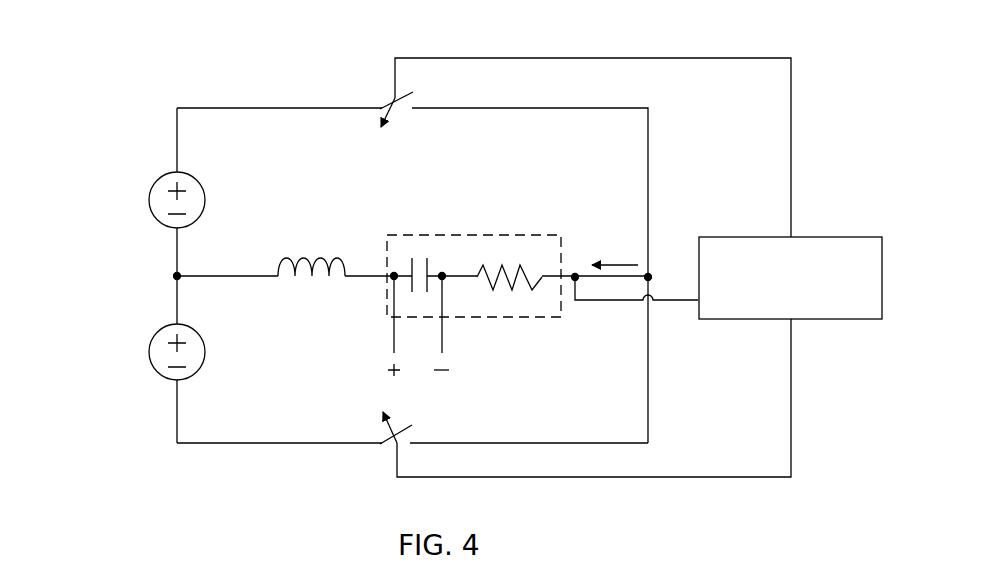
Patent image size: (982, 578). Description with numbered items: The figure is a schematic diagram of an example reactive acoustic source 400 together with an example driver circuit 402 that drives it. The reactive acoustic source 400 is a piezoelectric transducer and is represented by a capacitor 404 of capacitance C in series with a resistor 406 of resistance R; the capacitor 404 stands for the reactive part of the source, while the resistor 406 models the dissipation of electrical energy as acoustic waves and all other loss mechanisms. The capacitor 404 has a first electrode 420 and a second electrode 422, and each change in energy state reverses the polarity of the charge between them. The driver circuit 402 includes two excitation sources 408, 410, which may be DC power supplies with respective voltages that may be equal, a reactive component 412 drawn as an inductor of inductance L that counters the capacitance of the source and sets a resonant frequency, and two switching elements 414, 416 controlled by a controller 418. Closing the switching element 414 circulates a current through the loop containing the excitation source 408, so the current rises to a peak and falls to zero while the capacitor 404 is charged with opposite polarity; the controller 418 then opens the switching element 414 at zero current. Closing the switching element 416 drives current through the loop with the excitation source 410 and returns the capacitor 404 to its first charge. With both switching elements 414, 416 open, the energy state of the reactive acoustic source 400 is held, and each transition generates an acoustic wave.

The reactive acoustic source 400 is at (387, 233).
The driver circuit 402 is at (138, 70).
The capacitor 404 is at (436, 250).
The resistor 406 is at (525, 268).
The excitation source 408 is at (158, 176).
The excitation source 410 is at (158, 329).
The reactive component 412 is at (300, 259).
The switching element 414 is at (390, 104).
The switching element 416 is at (382, 440).
The controller 418 is at (748, 237).
The first electrode 420 is at (412, 287).
The second electrode 422 is at (427, 287).